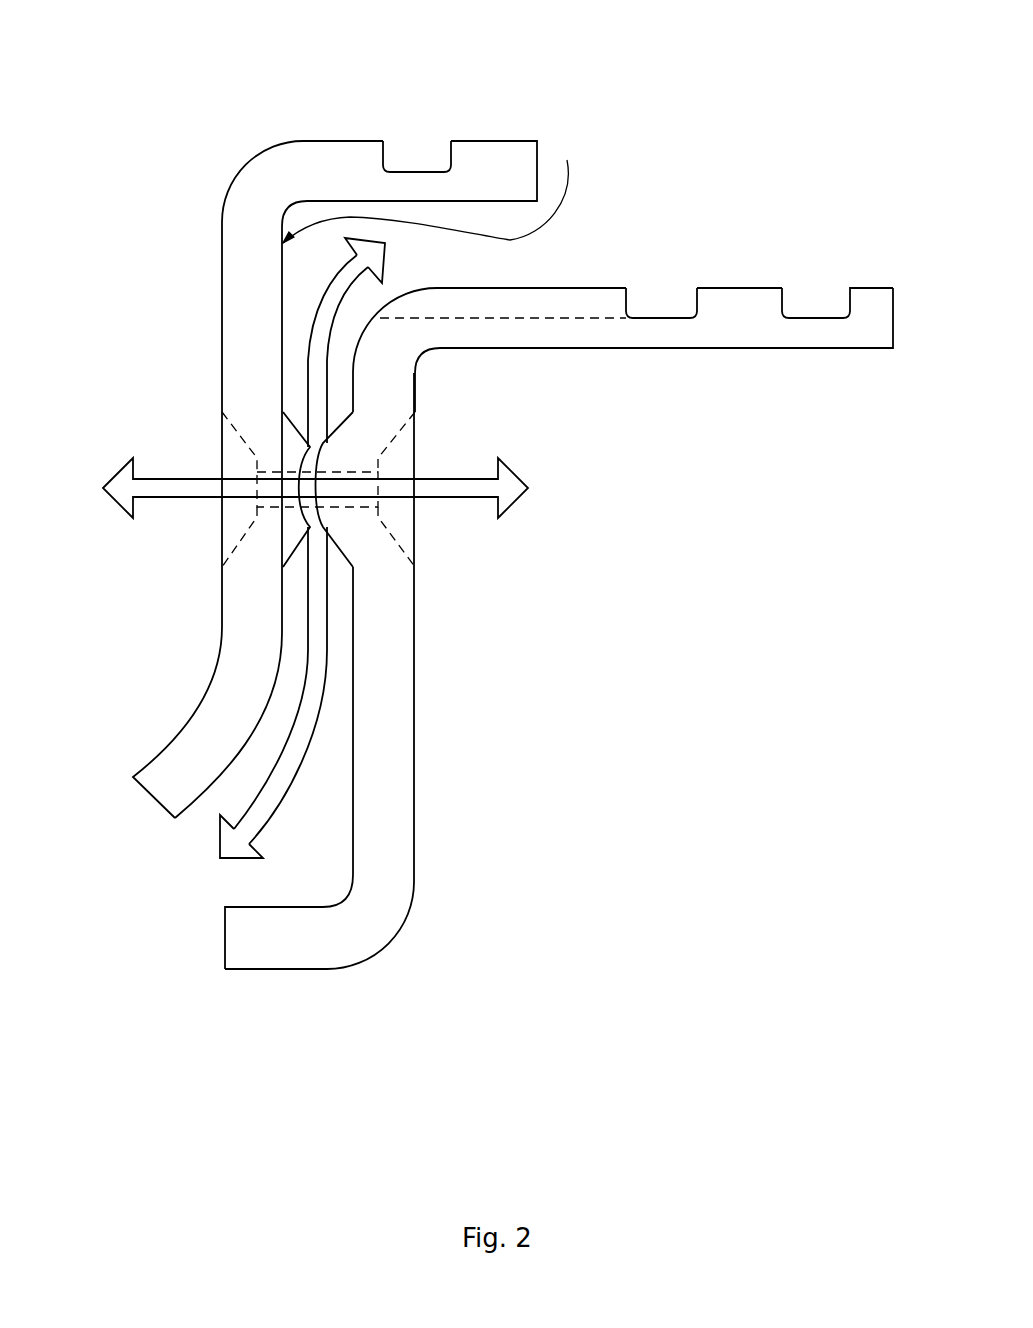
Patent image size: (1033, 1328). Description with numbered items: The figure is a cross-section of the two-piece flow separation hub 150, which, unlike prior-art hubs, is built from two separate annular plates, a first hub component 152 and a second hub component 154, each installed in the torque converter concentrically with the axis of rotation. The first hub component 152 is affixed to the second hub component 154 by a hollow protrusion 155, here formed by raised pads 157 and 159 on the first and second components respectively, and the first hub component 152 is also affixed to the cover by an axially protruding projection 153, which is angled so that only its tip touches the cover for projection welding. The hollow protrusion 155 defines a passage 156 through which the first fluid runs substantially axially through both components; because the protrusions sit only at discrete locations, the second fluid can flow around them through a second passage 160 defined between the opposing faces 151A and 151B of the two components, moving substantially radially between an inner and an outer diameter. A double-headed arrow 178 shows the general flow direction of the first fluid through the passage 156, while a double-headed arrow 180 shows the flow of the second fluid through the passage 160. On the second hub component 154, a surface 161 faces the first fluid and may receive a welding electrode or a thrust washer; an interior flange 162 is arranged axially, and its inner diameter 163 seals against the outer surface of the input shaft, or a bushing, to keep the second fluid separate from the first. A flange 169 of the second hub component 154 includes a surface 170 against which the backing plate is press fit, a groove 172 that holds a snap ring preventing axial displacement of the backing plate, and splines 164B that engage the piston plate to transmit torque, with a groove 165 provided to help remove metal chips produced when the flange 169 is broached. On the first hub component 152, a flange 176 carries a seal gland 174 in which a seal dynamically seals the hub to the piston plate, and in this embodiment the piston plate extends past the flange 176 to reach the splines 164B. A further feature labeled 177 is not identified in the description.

The flow separation hub 150 is at (188, 92).
The opposing face 151A is at (567, 160).
The opposing face 151B is at (302, 810).
The first hub component 152 is at (247, 302).
The projection 153 is at (153, 770).
The second hub component 154 is at (380, 862).
The hollow protrusion 155 is at (343, 562).
The passage 156 is at (365, 470).
The raised pad 157 is at (297, 532).
The raised pad 159 is at (343, 530).
The passage 160 is at (343, 867).
The surface 161 is at (415, 775).
The interior flange 162 is at (300, 953).
The inner diameter 163 is at (252, 972).
The splines 164B is at (557, 300).
The groove 165 is at (663, 300).
The flange 169 is at (748, 330).
The surface 170 is at (743, 287).
The groove 172 is at (820, 302).
The seal gland 174 is at (417, 162).
The flange 176 is at (328, 168).
The top surface 177 is at (497, 137).
The double-headed arrow 178 is at (513, 503).
The double-headed arrow 180 is at (220, 840).